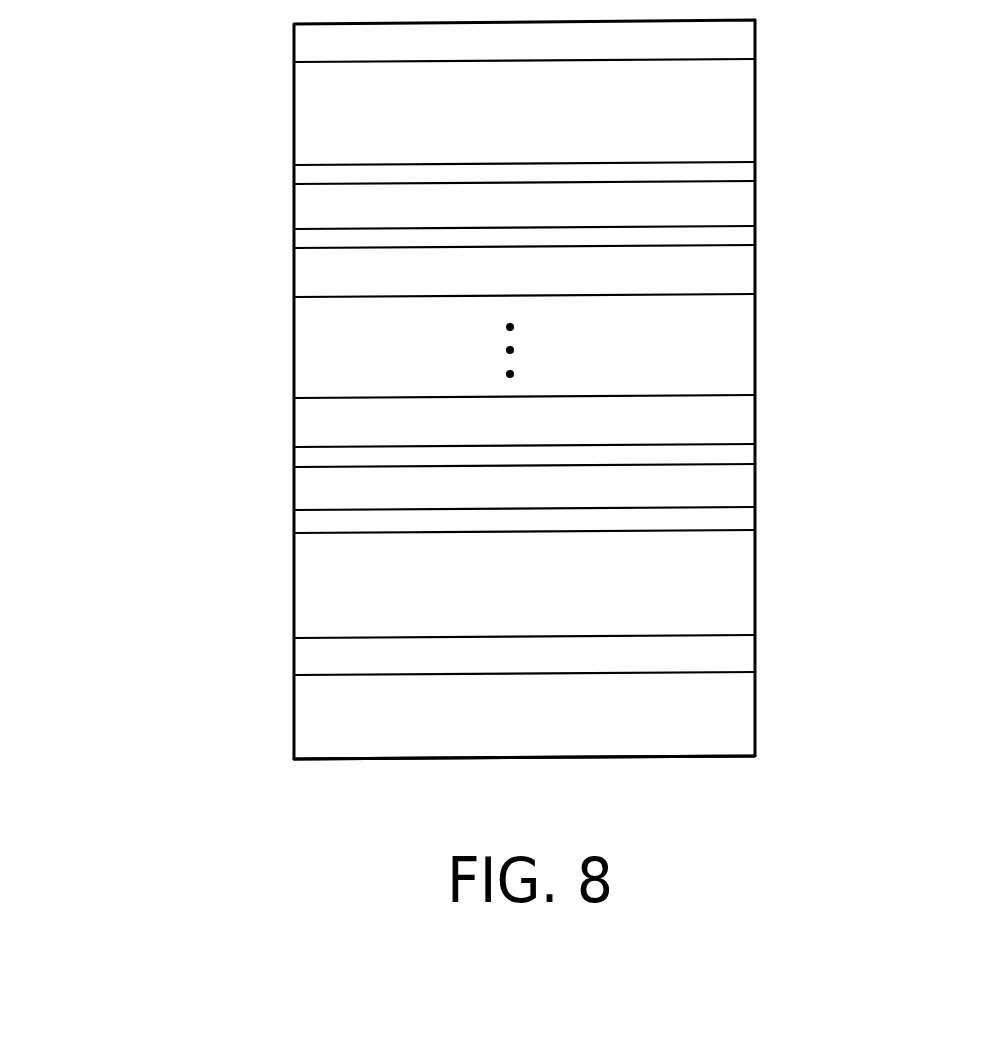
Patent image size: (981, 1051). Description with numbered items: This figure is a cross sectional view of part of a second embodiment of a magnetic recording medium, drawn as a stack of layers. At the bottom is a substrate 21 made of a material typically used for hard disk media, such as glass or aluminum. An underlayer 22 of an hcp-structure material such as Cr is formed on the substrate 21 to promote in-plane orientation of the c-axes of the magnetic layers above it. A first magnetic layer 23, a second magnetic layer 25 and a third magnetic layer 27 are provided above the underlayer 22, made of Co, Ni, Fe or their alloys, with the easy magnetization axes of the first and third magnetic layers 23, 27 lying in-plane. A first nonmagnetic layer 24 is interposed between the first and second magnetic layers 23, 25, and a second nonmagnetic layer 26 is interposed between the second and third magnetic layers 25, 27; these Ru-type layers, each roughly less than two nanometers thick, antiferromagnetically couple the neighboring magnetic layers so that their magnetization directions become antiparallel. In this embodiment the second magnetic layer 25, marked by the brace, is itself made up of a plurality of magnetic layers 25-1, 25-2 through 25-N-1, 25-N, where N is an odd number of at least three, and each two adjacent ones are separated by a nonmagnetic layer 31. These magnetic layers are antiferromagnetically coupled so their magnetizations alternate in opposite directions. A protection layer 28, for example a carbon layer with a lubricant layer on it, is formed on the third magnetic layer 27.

The substrate 21 is at (755, 716).
The underlayer 22 is at (755, 646).
The first magnetic layer 23 is at (755, 590).
The first nonmagnetic layer 24 is at (755, 513).
The second magnetic layer 25 is at (108, 195).
The magnetic layer 25-1 is at (293, 500).
The magnetic layer 25-2 is at (293, 430).
The magnetic layer 25-N-1 is at (293, 282).
The magnetic layer 25-N is at (293, 213).
The nonmagnetic layer 31 is at (293, 243).
The second nonmagnetic layer 26 is at (755, 170).
The third magnetic layer 27 is at (755, 122).
The protection layer 28 is at (755, 37).